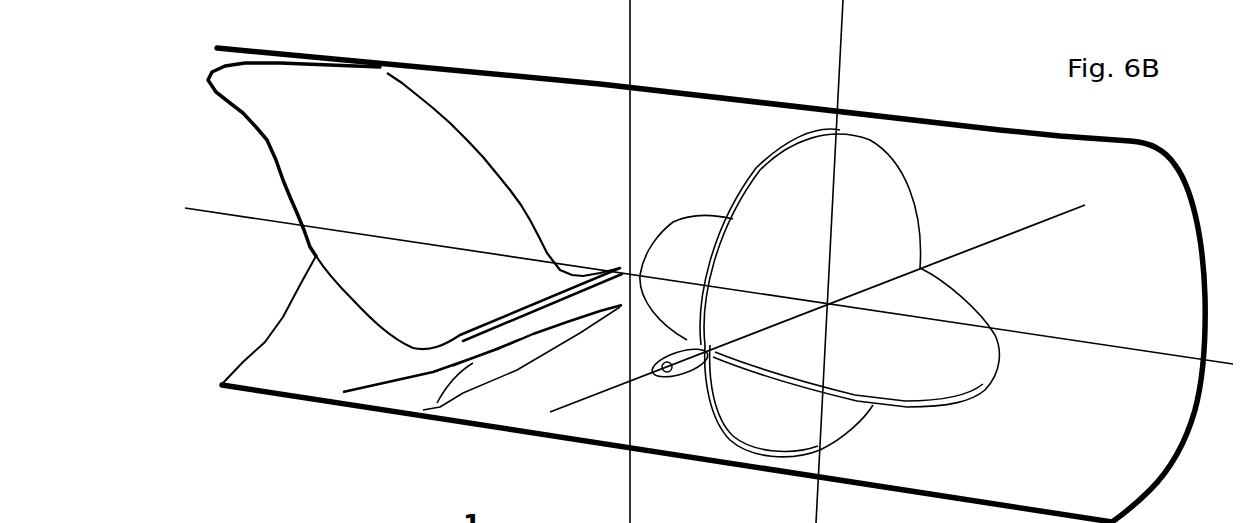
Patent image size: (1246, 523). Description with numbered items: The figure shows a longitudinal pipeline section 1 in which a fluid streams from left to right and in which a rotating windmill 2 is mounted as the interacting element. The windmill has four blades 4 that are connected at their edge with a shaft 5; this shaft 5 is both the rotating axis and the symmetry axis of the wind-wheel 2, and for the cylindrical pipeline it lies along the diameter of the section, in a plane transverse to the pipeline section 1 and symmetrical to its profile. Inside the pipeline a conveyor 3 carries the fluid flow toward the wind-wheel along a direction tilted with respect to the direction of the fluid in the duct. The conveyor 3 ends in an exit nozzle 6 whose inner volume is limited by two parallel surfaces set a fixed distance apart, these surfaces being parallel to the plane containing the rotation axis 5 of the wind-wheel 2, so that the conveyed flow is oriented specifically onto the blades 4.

The longitudinal pipeline section 1 is at (711, 280).
The rotating windmill 2 is at (817, 294).
The conveyor 3 is at (414, 223).
The blades 4 is at (820, 293).
The shaft 5 is at (680, 363).
The exit nozzle 6 is at (482, 339).